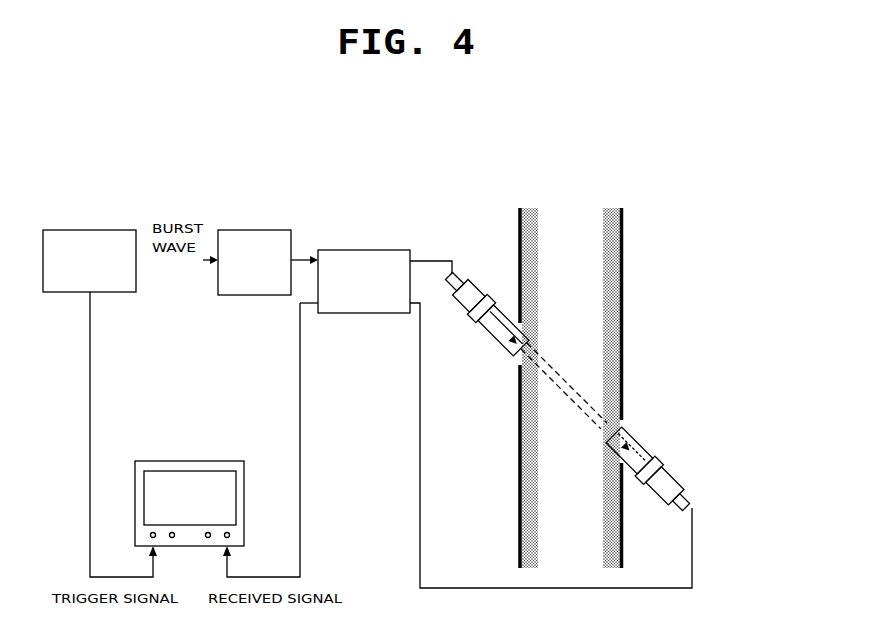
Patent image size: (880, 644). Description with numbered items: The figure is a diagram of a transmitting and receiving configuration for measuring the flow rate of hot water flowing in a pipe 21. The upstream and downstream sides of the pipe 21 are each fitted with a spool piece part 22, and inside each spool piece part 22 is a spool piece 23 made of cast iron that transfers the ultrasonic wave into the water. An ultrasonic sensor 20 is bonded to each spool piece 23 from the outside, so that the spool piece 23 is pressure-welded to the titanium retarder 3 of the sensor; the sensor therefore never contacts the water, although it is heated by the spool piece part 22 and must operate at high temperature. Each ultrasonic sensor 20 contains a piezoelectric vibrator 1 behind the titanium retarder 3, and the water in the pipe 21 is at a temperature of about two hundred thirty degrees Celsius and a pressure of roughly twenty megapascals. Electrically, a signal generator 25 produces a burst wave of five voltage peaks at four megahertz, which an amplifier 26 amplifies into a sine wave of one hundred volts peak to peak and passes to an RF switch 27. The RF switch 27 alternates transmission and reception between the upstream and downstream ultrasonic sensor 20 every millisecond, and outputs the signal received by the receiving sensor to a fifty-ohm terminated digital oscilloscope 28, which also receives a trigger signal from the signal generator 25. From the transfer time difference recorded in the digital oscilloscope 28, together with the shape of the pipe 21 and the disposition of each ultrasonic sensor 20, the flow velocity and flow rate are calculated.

The piezoelectric vibrator 1 is at (455, 272).
The titanium retarder 3 is at (486, 272).
The ultrasonic sensor 20 is at (576, 345).
The pipe 21 is at (623, 240).
The spool piece part 22 is at (652, 430).
The spool piece 23 is at (658, 458).
The signal generator 25 is at (92, 230).
The amplifier 26 is at (257, 230).
The RF switch 27 is at (360, 313).
The digital oscilloscope 28 is at (193, 461).